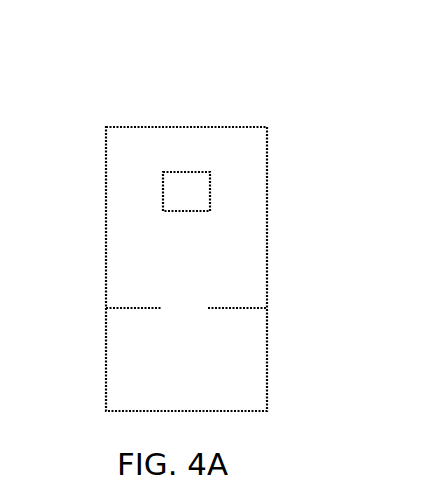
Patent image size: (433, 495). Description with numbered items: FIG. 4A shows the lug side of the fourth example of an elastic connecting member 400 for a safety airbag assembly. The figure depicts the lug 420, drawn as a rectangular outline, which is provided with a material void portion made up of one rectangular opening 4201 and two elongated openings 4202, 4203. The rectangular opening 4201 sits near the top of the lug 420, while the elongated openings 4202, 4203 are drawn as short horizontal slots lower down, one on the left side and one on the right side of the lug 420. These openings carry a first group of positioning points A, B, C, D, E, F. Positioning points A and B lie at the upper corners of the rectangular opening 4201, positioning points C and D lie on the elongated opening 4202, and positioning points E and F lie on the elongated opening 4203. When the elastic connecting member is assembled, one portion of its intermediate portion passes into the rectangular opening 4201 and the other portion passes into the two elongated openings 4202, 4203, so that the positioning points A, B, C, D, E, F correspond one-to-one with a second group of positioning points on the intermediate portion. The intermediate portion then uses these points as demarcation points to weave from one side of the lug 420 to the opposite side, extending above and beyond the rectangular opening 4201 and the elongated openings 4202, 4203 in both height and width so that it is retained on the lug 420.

The elastic connecting member 400 is at (305, 50).
The lug 420 is at (230, 363).
The rectangular opening 4201 is at (185, 193).
The elongated opening 4202 is at (227, 307).
The elongated opening 4203 is at (152, 303).
The positioning point A is at (159, 165).
The positioning point B is at (215, 163).
The positioning point C is at (254, 315).
The positioning point D is at (216, 314).
The positioning point E is at (153, 316).
The positioning point F is at (113, 312).